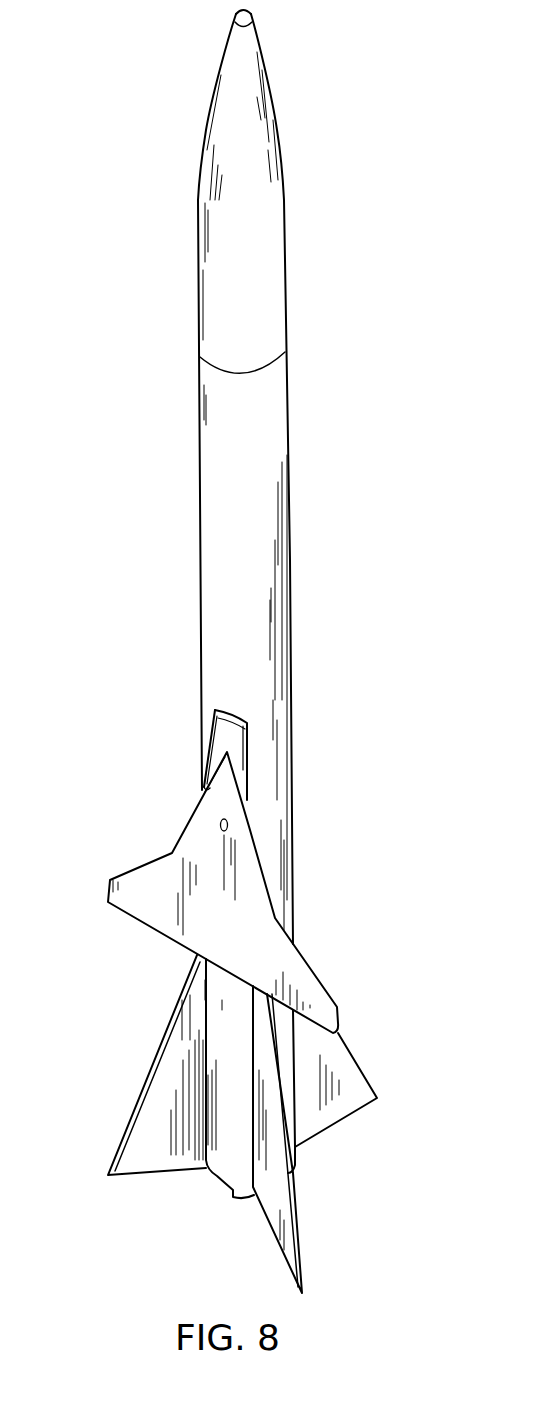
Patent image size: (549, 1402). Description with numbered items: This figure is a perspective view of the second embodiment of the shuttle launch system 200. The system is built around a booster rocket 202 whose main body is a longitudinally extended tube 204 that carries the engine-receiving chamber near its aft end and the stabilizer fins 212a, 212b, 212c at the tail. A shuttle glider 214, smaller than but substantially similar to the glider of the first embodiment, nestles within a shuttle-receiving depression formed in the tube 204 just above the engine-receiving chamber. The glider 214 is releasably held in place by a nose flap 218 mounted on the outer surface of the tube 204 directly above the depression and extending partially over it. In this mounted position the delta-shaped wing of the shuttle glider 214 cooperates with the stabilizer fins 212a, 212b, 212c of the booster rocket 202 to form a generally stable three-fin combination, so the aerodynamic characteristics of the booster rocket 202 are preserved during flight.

The shuttle launch system 200 is at (168, 410).
The booster rocket 202 is at (257, 565).
The longitudinally extended tube 204 is at (250, 617).
The nose flap 218 is at (233, 743).
The shuttle glider 214 is at (218, 898).
The stabilizer fin 212a is at (333, 1098).
The stabilizer fin 212b is at (143, 1157).
The stabilizer fin 212c is at (275, 1197).